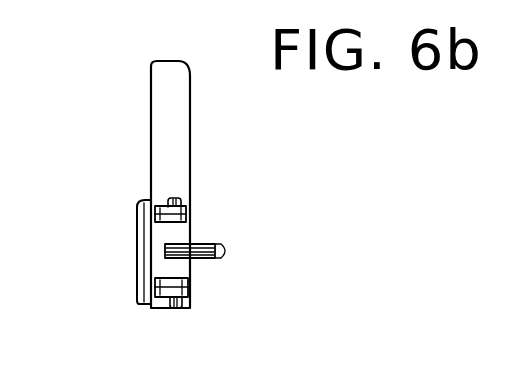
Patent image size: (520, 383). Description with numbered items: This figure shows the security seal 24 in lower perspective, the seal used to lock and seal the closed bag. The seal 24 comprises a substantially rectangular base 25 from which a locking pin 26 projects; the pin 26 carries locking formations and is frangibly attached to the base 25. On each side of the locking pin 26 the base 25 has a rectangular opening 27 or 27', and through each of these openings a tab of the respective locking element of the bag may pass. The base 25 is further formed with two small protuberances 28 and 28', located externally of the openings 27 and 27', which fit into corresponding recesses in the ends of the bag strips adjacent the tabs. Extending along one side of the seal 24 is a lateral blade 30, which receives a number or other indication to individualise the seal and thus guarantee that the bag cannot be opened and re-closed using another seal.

The security seal 24 is at (213, 200).
The base 25 is at (151, 248).
The locking pin 26 is at (215, 257).
The rectangular opening 27 is at (214, 307).
The rectangular opening 27' is at (247, 225).
The protuberance 28 is at (183, 336).
The protuberance 28' is at (224, 169).
The lateral blade 30 is at (172, 93).